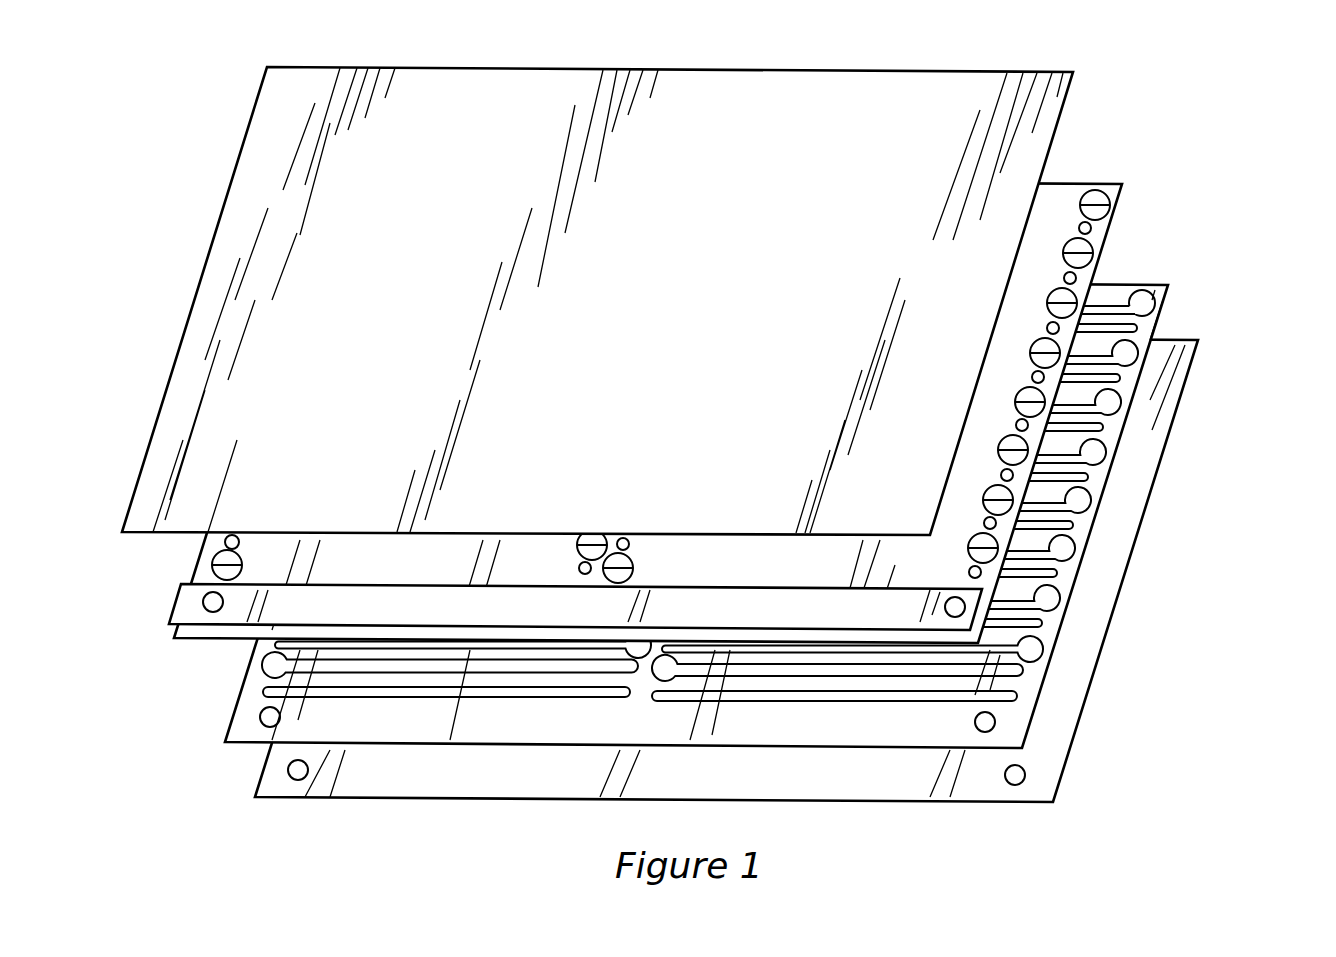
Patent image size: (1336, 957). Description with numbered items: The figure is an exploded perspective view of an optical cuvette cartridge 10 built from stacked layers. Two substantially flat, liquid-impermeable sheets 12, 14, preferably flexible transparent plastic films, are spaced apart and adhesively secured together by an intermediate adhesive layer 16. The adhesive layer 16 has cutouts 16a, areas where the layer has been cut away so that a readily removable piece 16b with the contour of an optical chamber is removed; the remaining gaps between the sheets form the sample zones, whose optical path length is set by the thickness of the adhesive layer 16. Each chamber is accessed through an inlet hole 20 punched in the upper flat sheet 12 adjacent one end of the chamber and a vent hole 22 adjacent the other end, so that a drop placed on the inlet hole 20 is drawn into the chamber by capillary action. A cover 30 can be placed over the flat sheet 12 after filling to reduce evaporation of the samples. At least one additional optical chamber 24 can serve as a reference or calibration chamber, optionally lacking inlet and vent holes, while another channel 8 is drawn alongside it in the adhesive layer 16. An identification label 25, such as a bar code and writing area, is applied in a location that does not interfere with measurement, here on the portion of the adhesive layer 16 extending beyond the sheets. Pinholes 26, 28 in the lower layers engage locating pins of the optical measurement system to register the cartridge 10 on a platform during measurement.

The optical cuvette cartridge 10 is at (711, 441).
The cover 30 is at (953, 112).
The flat sheet 12 is at (690, 385).
The inlet hole 20 is at (1097, 200).
The vent hole 22 is at (1093, 225).
The adhesive layer 16 is at (762, 532).
The cutout 16a is at (1163, 295).
The removable piece 16b is at (1143, 318).
The flat sheet 14 is at (707, 590).
The identification label 25 is at (250, 618).
The pinhole 26 is at (294, 780).
The pinhole 28 is at (1020, 787).
The channel 8 is at (818, 682).
The reference chamber 24 is at (890, 702).